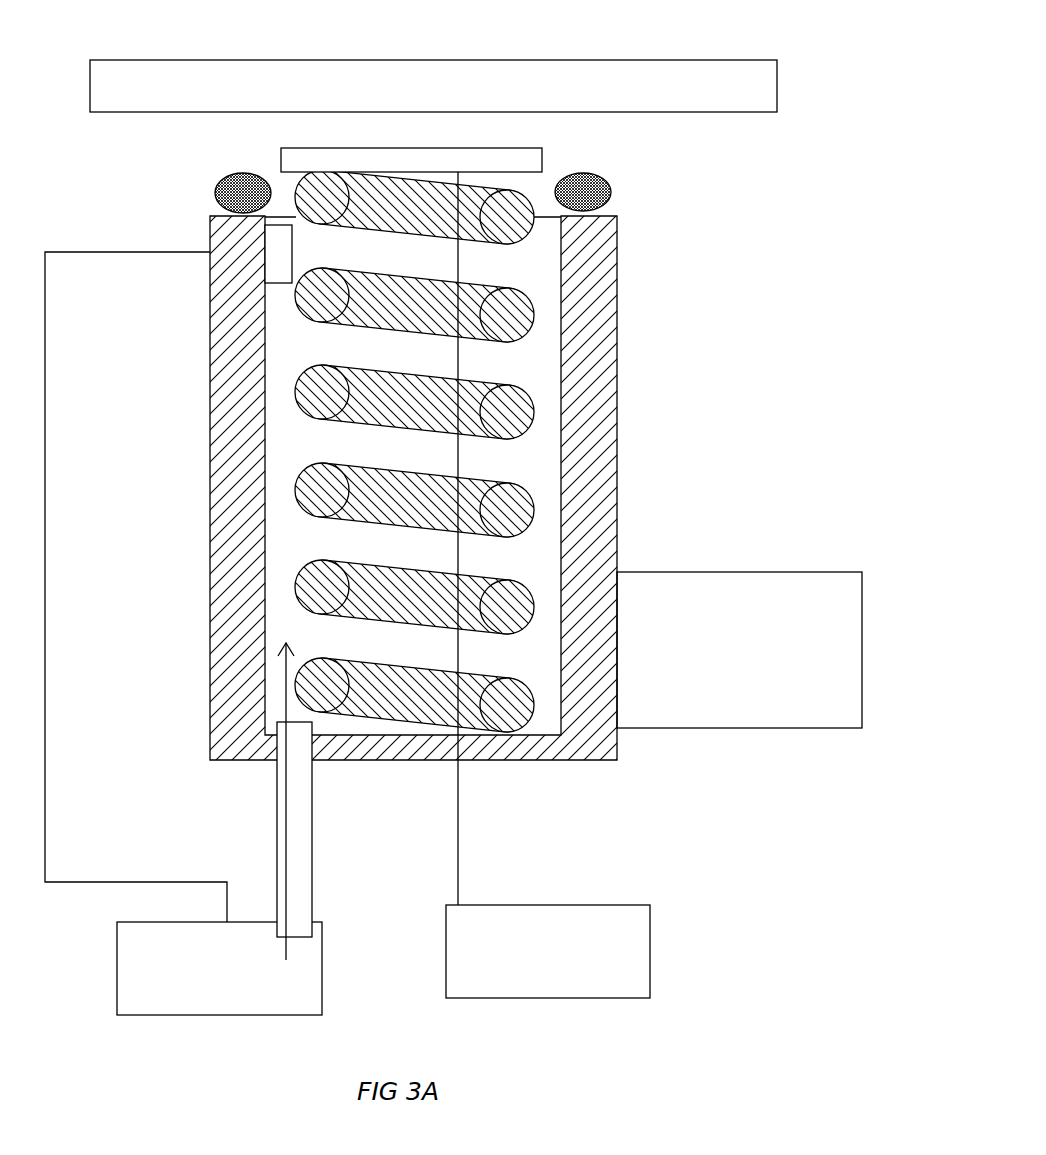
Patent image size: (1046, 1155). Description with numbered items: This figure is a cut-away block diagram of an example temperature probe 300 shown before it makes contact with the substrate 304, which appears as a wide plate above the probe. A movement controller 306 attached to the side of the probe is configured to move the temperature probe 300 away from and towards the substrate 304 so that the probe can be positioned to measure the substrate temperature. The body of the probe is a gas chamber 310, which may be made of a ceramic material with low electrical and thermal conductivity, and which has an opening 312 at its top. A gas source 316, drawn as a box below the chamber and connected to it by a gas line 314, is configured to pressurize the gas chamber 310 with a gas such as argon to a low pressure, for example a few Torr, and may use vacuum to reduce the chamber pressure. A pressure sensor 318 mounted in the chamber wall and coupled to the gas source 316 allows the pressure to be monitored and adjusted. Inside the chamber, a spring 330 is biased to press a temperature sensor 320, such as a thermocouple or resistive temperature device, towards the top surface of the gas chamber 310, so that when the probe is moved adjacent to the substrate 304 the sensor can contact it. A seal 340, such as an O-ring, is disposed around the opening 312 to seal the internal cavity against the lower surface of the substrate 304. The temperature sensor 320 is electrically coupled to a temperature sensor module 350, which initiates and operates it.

The temperature probe 300 is at (118, 31).
The substrate 304 is at (175, 93).
The movement controller 306 is at (690, 620).
The gas chamber 310 is at (595, 438).
The opening 312 is at (553, 167).
The gas source 314 is at (117, 960).
The gas 316 is at (172, 956).
The pressure sensor 318 is at (273, 243).
The temperature sensor 320 is at (302, 157).
The spring 330 is at (537, 505).
The seal 340 is at (608, 180).
The temperature sensor module 350 is at (600, 943).